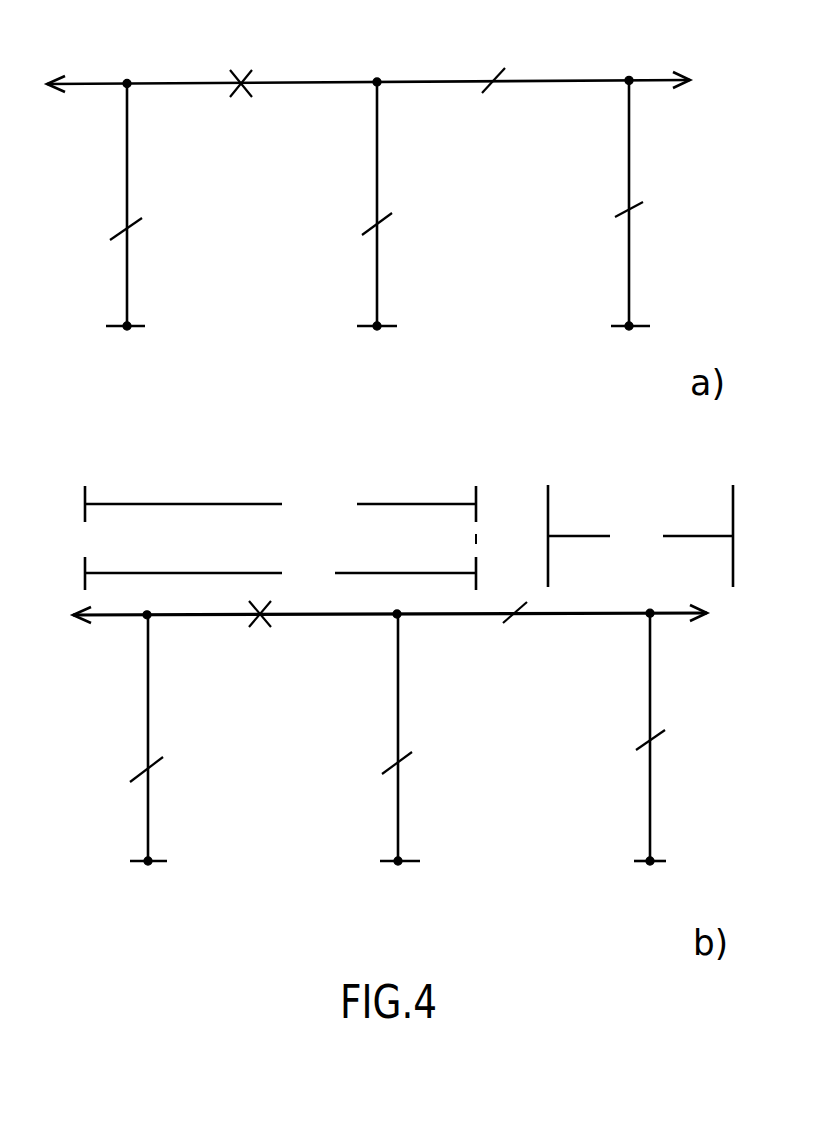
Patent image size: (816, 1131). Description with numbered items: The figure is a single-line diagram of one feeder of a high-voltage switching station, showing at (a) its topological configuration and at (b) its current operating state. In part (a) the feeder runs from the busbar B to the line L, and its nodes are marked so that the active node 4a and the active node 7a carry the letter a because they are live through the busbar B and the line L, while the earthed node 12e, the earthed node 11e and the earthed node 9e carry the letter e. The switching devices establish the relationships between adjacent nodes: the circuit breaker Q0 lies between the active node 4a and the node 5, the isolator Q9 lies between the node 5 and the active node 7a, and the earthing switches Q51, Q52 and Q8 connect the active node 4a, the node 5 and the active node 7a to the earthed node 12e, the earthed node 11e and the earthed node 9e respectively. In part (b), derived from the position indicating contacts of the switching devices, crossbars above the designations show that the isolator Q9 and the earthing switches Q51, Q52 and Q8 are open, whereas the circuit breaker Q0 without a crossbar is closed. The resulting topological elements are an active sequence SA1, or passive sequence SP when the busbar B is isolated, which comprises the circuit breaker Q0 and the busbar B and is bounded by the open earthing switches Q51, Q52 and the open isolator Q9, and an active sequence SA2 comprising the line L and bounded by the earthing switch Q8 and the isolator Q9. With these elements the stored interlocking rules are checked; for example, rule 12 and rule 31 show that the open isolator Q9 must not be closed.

The busbar B is at (368, 55).
The line L is at (696, 78).
The active node 4a is at (133, 72).
The node 5 is at (380, 72).
The active node 7a is at (632, 70).
The circuit breaker Q0 is at (253, 70).
The isolator Q9 is at (498, 66).
The earthing switch Q51 is at (142, 218).
The earthing switch Q52 is at (392, 214).
The earthing switch Q8 is at (638, 203).
The earthed node 12e is at (113, 332).
The earthed node 11e is at (363, 330).
The earthed node 9e is at (610, 332).
The active sequence SA1 is at (280, 505).
The active sequence SA2 is at (640, 536).
The passive sequence SP is at (280, 573).
The switching interlocking rule 12 is at (499, 515).
The switching interlocking rule 31 is at (510, 570).